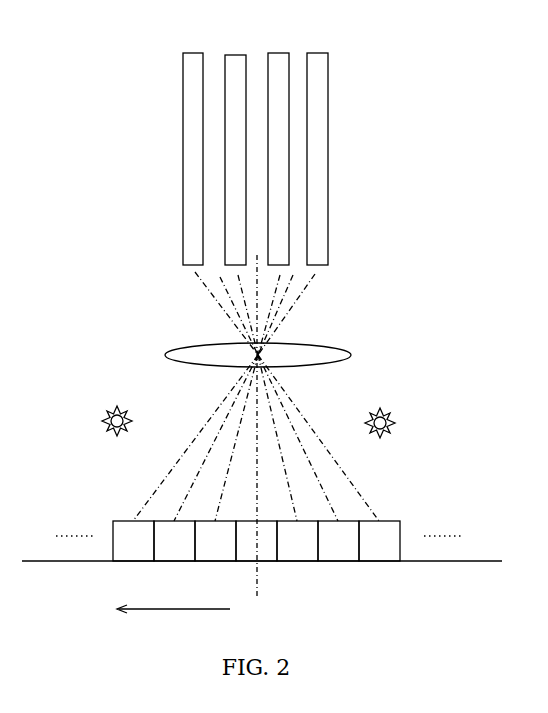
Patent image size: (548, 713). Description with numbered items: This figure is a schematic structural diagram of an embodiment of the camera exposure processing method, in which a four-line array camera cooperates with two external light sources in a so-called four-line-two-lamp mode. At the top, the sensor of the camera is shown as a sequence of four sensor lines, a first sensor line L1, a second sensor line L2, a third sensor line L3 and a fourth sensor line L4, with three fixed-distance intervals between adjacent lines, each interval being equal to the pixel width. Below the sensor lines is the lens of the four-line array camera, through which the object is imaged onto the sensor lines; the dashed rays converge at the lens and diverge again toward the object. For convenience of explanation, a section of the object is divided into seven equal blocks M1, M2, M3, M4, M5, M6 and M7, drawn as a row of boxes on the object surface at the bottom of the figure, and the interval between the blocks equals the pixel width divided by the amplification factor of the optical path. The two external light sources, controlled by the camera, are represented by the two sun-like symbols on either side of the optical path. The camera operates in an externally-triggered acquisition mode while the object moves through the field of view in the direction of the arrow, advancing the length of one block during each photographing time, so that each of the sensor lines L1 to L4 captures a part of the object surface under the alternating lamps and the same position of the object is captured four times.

The first sensor line L1 is at (193, 146).
The second sensor line L2 is at (235, 146).
The third sensor line L3 is at (278, 146).
The fourth sensor line L4 is at (317, 146).
The block of the object M1 is at (133, 541).
The block of the object M2 is at (174, 541).
The block of the object M3 is at (215, 541).
The block of the object M4 is at (256, 541).
The block of the object M5 is at (297, 541).
The block of the object M6 is at (338, 541).
The block of the object M7 is at (379, 541).